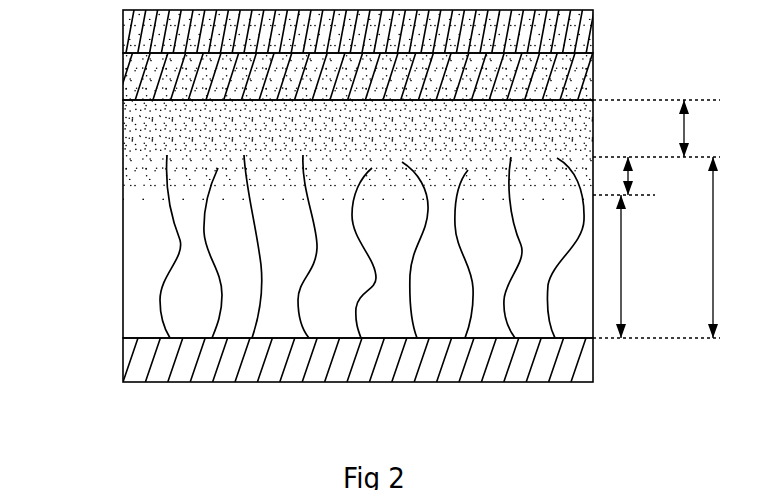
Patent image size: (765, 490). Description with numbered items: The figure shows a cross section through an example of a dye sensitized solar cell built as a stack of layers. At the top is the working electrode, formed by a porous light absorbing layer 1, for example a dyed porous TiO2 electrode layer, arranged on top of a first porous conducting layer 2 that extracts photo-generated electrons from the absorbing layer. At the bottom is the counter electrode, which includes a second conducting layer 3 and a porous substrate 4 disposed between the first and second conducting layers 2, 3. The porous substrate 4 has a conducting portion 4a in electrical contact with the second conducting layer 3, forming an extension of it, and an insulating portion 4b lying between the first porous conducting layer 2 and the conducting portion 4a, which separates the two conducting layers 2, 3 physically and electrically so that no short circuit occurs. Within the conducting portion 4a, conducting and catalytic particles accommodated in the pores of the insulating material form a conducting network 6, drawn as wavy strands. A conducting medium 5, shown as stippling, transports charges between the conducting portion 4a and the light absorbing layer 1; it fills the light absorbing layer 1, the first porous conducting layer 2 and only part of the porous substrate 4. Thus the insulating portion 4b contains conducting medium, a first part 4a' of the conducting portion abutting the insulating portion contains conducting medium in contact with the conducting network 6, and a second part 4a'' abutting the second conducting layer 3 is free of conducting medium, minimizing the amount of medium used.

The porous light absorbing layer 1 is at (120, 32).
The first porous conducting layer 2 is at (120, 78).
The second conducting layer 3 is at (120, 359).
The porous substrate 4 is at (120, 219).
The conducting medium 5 is at (147, 117).
The conducting network 6 is at (209, 248).
The conducting portion 4a is at (673, 247).
The insulating portion 4b is at (658, 128).
The first part of the conducting portion 4a' is at (636, 176).
The second part of the conducting portion 4a'' is at (648, 266).